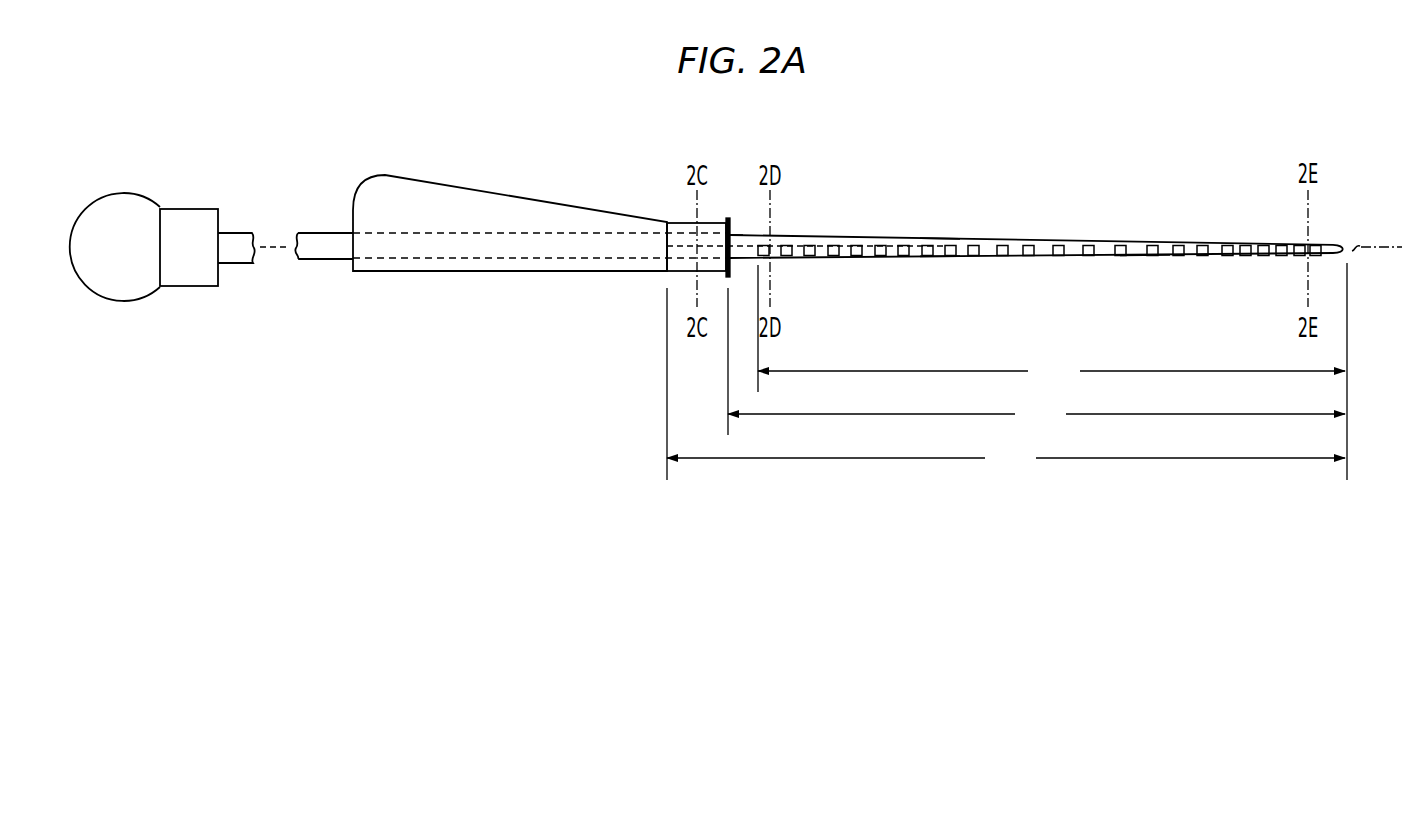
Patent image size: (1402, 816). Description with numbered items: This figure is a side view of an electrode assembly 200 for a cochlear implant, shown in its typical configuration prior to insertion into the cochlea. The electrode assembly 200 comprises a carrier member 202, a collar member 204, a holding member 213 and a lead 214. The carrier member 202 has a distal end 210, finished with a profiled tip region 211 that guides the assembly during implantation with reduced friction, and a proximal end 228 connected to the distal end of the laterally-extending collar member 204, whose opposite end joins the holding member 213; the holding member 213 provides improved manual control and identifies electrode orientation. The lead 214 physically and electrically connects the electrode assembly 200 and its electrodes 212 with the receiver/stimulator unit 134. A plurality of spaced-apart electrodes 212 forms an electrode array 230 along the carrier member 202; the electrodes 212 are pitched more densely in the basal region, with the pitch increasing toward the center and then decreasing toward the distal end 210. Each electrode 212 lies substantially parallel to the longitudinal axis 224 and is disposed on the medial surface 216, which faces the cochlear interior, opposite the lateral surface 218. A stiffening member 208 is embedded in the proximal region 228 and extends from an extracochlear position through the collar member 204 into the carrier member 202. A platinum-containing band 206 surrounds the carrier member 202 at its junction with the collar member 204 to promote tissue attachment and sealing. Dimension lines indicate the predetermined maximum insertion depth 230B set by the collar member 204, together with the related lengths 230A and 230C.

The receiver/stimulator unit 134 is at (138, 207).
The electrode assembly 200 is at (429, 142).
The carrier member 202 is at (1167, 241).
The collar member 204 is at (677, 225).
The band 206 is at (727, 217).
The stiffening member 208 is at (797, 245).
The distal end 210 is at (1302, 232).
The tip region 211 is at (1357, 247).
The electrodes 212 is at (1027, 246).
The holding member 213 is at (353, 187).
The lead 214 is at (342, 247).
The medial surface 216 is at (937, 258).
The lateral surface 218 is at (936, 239).
The longitudinal axis 224 is at (1378, 252).
The proximal end 228 is at (744, 221).
The electrode array 230 is at (1146, 273).
The length of electrode array 230A is at (1052, 371).
The predetermined maximum insertion depth 230B is at (1036, 361).
The overall shaft length 230C is at (1006, 384).